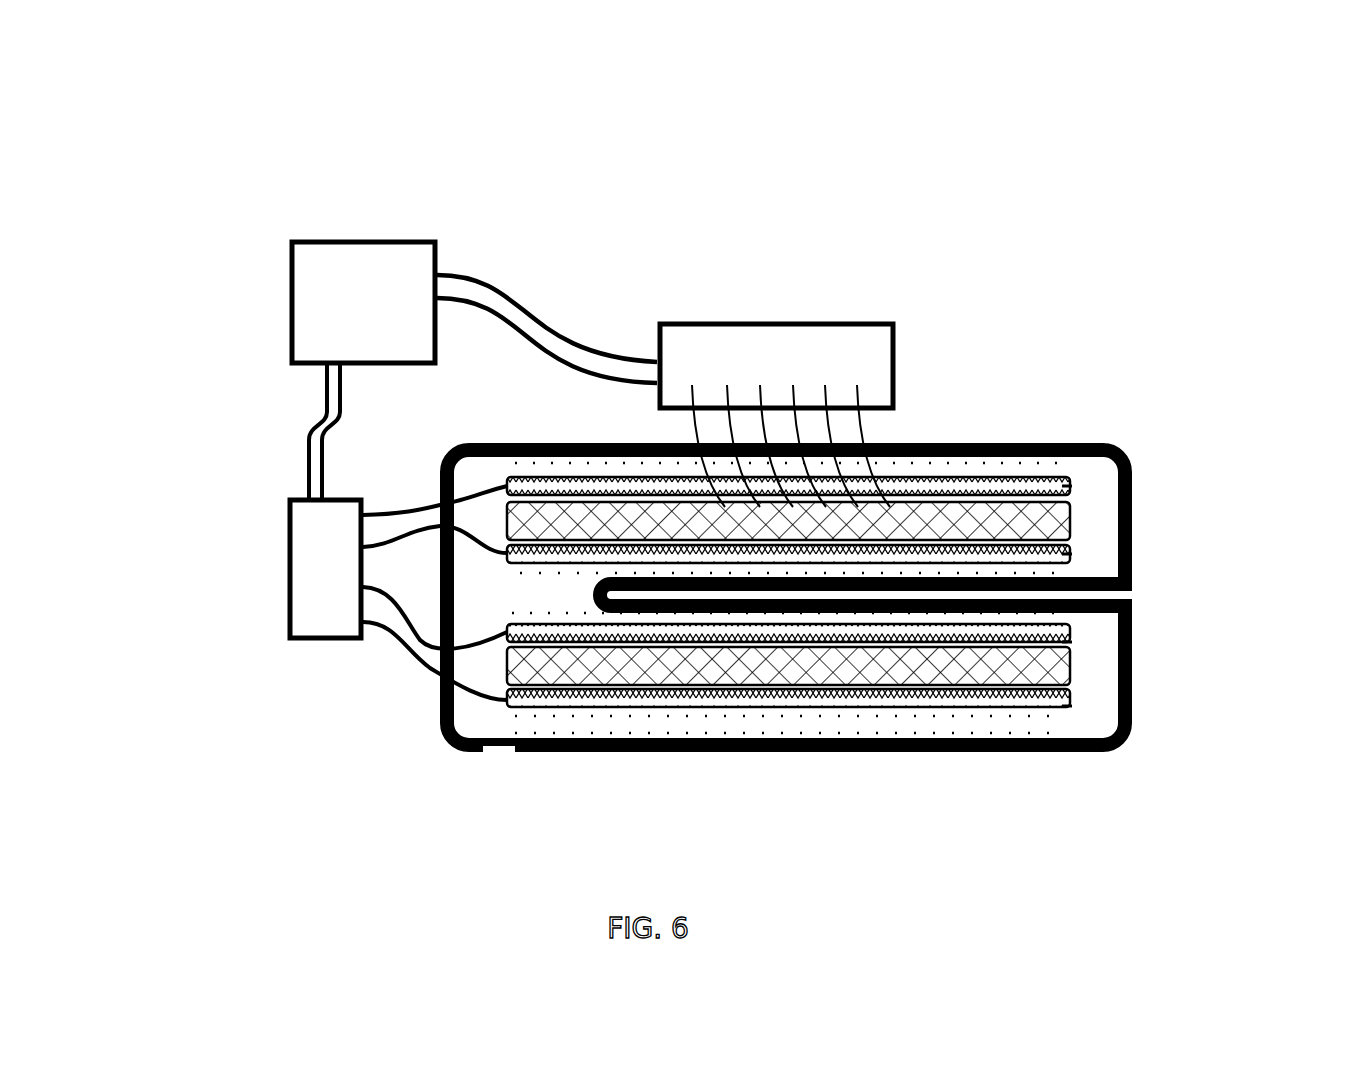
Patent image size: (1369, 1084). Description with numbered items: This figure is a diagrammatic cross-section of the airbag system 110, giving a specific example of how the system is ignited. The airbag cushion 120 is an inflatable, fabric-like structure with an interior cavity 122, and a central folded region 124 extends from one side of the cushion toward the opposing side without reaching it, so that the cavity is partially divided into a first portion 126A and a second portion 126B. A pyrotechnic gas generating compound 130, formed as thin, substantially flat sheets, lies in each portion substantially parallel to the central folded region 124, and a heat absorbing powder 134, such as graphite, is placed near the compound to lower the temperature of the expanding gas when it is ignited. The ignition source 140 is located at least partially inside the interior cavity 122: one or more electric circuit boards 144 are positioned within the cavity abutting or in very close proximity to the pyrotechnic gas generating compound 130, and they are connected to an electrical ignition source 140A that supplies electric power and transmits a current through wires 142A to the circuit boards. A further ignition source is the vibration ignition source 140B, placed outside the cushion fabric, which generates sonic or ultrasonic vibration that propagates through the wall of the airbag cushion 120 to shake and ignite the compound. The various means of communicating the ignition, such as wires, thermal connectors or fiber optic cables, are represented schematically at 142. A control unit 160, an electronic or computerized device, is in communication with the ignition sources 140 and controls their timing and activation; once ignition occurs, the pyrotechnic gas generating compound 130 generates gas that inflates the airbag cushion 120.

The airbag system 110 is at (172, 162).
The airbag cushion 120 is at (1007, 440).
The interior cavity 122 is at (1097, 480).
The central folded region 124 is at (1145, 599).
The first portion 126A is at (1227, 453).
The second portion 126B is at (1227, 617).
The pyrotechnic gas generating compound 130 is at (1007, 520).
The heat absorbing powder 134 is at (1048, 727).
The ignition source 140 is at (516, 417).
The electrical ignition source 140A is at (250, 569).
The vibration ignition source 140B is at (800, 322).
The communication means 142 is at (403, 655).
The wires 142A is at (395, 653).
The electric circuit boards 144 is at (1070, 554).
The control unit 160 is at (336, 319).